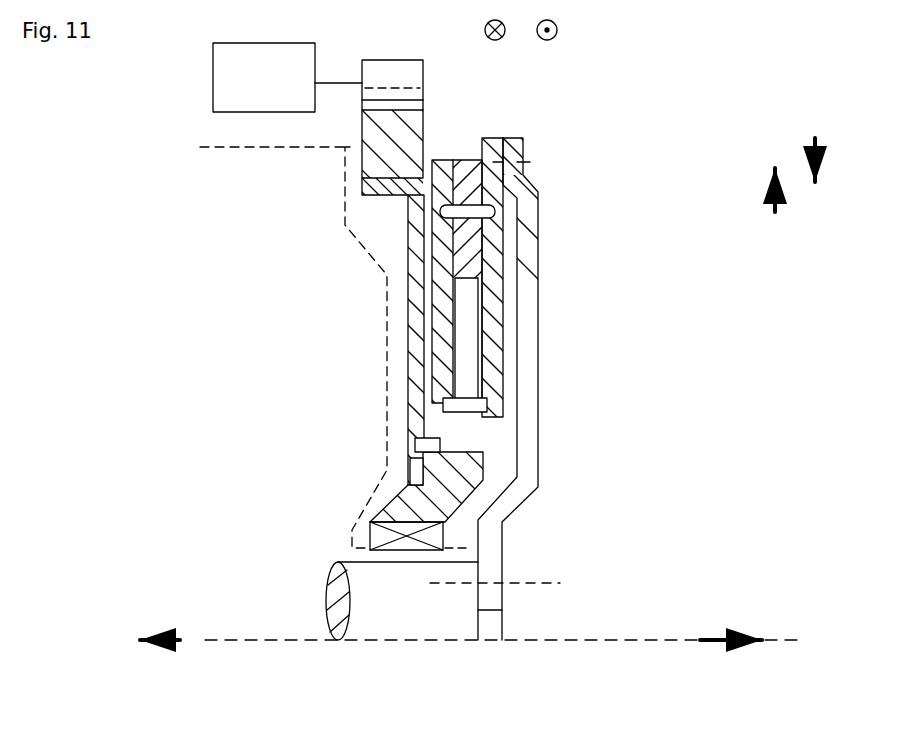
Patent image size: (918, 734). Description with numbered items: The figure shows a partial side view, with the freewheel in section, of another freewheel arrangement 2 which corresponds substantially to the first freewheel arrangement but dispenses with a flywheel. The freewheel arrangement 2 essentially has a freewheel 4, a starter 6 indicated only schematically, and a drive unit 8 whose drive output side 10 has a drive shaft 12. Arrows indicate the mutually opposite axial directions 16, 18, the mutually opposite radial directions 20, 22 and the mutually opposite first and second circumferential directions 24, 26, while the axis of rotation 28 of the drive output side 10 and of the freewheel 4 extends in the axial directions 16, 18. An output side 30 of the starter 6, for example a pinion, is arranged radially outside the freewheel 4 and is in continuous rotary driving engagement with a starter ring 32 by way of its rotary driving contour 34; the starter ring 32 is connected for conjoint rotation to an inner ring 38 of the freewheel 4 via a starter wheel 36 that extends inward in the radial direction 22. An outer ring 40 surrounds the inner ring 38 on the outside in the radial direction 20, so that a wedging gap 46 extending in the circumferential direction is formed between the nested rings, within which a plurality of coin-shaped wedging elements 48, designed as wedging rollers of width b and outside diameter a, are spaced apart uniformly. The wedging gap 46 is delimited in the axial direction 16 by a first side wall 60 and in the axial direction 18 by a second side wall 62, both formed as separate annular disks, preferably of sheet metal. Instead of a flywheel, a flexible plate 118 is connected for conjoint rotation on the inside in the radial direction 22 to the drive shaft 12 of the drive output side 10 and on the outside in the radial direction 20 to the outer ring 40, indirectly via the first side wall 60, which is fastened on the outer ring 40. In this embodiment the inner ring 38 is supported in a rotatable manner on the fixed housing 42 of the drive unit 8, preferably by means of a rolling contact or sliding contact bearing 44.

The freewheel arrangement 2 is at (688, 104).
The freewheel 4 is at (513, 312).
The starter 6 is at (272, 88).
The drive unit 8 is at (255, 473).
The drive output side 10 is at (496, 632).
The drive shaft 12 is at (389, 618).
The axial direction 16 is at (748, 650).
The axial direction 18 is at (150, 648).
The radial direction 20 is at (768, 185).
The radial direction 22 is at (824, 165).
The first circumferential direction 24 is at (484, 30).
The second circumferential direction 26 is at (558, 30).
The axis of rotation 28 is at (640, 645).
The output side of the starter 30 is at (381, 72).
The starter ring 32 is at (372, 127).
The rotary driving contour 34 is at (402, 105).
The starter wheel 36 is at (418, 263).
The inner ring 38 is at (410, 425).
The outer ring 40 is at (486, 236).
The housing 42 is at (245, 148).
The rolling contact or sliding contact bearing 44 is at (435, 538).
The wedging gap 46 is at (503, 380).
The wedging elements 48 is at (467, 333).
The first side wall 60 is at (488, 355).
The second side wall 62 is at (437, 247).
The flexible plate 118 is at (527, 262).